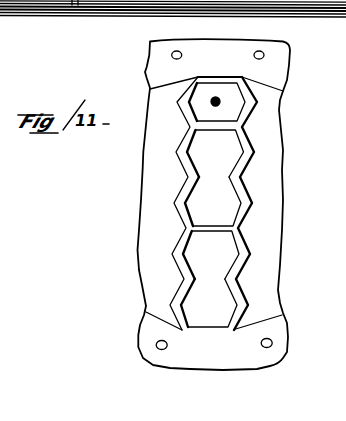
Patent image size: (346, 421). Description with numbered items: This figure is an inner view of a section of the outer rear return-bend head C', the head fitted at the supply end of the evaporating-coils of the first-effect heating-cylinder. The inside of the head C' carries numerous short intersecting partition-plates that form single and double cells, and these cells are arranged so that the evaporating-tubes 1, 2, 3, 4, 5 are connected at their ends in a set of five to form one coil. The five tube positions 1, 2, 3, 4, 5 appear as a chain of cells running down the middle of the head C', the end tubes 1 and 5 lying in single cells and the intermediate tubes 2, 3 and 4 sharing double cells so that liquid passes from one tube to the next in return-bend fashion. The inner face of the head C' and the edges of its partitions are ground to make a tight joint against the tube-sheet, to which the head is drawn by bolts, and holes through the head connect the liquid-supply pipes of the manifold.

The return-bend head C' is at (214, 204).
The evaporating-tube 1 is at (217, 101).
The evaporating-tube 2 is at (215, 153).
The evaporating-tube 3 is at (213, 201).
The evaporating-tube 4 is at (211, 255).
The evaporating-tube 5 is at (209, 303).